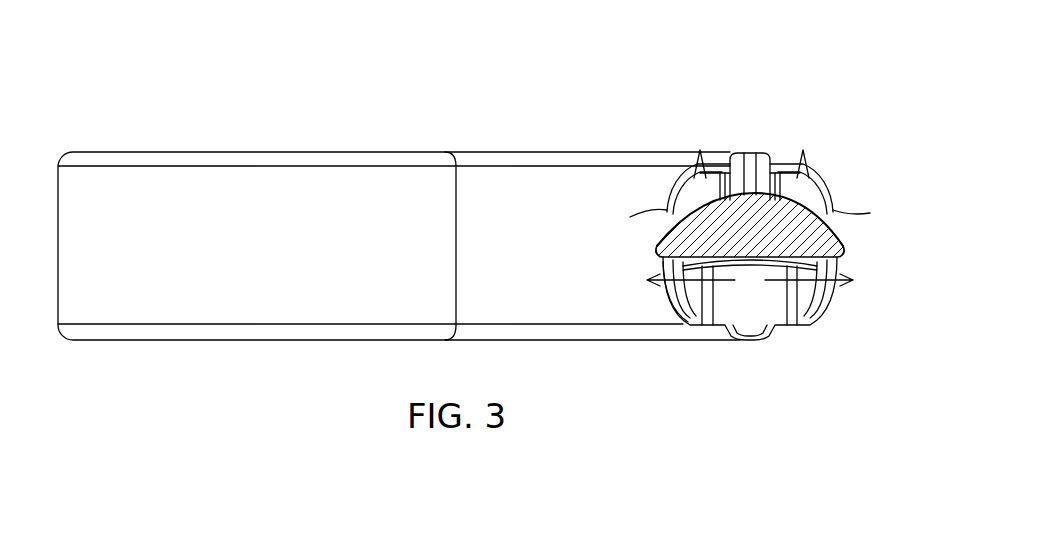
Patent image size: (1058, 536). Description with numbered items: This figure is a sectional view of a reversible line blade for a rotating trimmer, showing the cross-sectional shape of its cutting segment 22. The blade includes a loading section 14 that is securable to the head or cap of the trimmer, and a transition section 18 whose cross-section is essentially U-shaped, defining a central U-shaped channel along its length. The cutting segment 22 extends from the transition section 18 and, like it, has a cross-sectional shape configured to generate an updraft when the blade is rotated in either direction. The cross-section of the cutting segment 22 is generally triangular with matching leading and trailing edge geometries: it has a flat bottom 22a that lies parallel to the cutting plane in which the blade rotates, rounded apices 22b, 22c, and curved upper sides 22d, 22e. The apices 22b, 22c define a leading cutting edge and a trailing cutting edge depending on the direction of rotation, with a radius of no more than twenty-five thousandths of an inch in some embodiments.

The loading section 14 is at (180, 138).
The transition section 18 is at (803, 263).
The cutting segment 22 is at (840, 277).
The flat bottom 22a is at (685, 270).
The rounded apex 22b is at (655, 242).
The rounded apex 22c is at (827, 247).
The curved upper side 22d is at (713, 203).
The curved upper side 22e is at (807, 203).